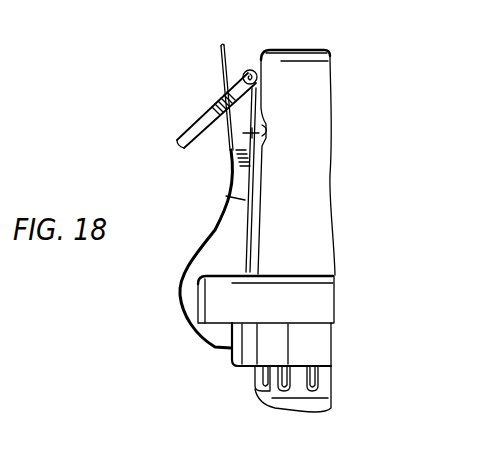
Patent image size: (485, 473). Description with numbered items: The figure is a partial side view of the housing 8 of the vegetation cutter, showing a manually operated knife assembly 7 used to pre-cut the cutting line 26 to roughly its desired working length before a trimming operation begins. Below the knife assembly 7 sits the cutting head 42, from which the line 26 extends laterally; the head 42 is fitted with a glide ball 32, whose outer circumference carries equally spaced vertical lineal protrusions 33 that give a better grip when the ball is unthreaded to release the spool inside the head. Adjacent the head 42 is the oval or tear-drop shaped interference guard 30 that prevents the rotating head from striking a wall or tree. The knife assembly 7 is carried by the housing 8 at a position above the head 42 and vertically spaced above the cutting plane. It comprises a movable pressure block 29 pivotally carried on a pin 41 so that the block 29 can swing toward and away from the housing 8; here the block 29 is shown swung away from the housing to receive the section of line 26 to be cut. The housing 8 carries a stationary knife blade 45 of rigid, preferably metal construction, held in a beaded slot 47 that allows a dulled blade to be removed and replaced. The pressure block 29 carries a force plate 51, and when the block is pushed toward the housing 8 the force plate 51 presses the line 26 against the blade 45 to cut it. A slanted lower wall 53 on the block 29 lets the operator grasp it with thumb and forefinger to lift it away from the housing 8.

The knife assembly 7 is at (107, 124).
The housing 8 is at (306, 50).
The cutting line 26 is at (197, 253).
The pressure block 29 is at (192, 127).
The interference guard 30 is at (313, 293).
The glide ball 32 is at (313, 413).
The vertical lineal protrusions 33 is at (280, 392).
The pin 41 is at (250, 68).
The cutting head 42 is at (226, 357).
The stationary knife blade 45 is at (233, 157).
The beaded slot 47 is at (272, 136).
The force plate 51 is at (222, 93).
The slanted lower wall 53 is at (185, 153).